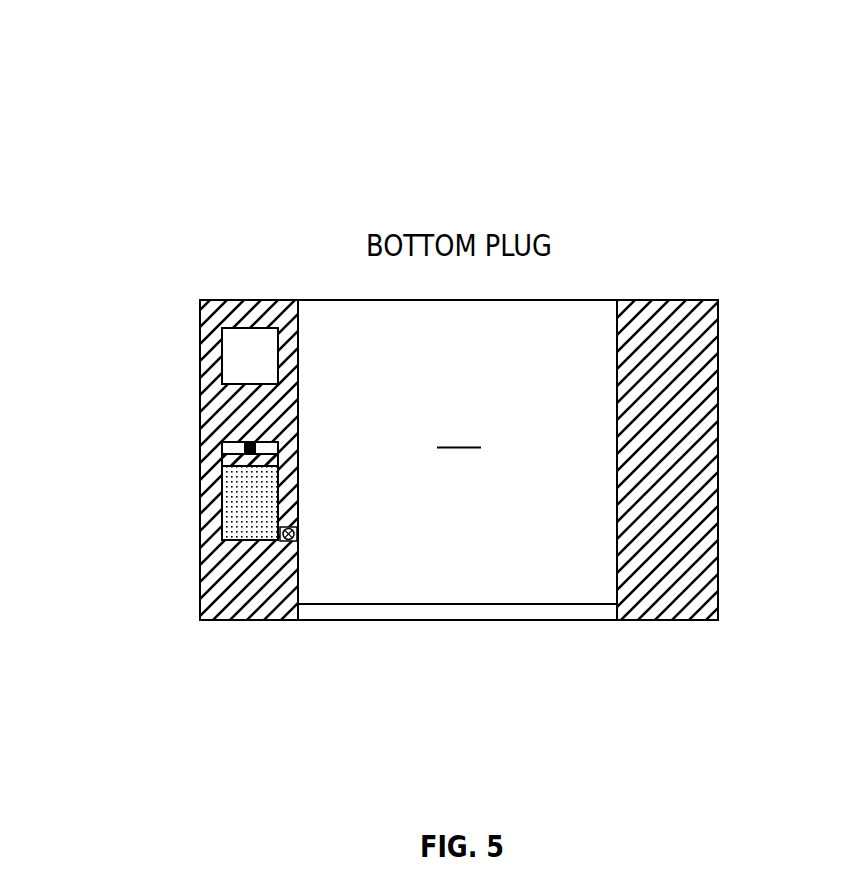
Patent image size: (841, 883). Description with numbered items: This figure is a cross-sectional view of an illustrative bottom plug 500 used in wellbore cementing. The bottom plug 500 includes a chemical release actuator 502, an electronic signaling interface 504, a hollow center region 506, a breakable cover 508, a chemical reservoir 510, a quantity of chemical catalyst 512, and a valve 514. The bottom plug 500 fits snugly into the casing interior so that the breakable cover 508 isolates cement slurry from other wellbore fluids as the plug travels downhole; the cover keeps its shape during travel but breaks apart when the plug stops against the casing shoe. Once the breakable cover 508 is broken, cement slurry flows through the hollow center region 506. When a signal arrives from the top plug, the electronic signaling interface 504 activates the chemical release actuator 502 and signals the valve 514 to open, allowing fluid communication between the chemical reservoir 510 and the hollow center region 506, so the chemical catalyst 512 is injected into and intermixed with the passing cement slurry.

The bottom plug 500 is at (139, 96).
The chemical release actuator 502 is at (210, 457).
The electronic signaling interface 504 is at (238, 346).
The hollow center region 506 is at (457, 452).
The breakable cover 508 is at (411, 621).
The chemical reservoir 510 is at (208, 491).
The chemical catalyst 512 is at (228, 514).
The valve 514 is at (275, 550).